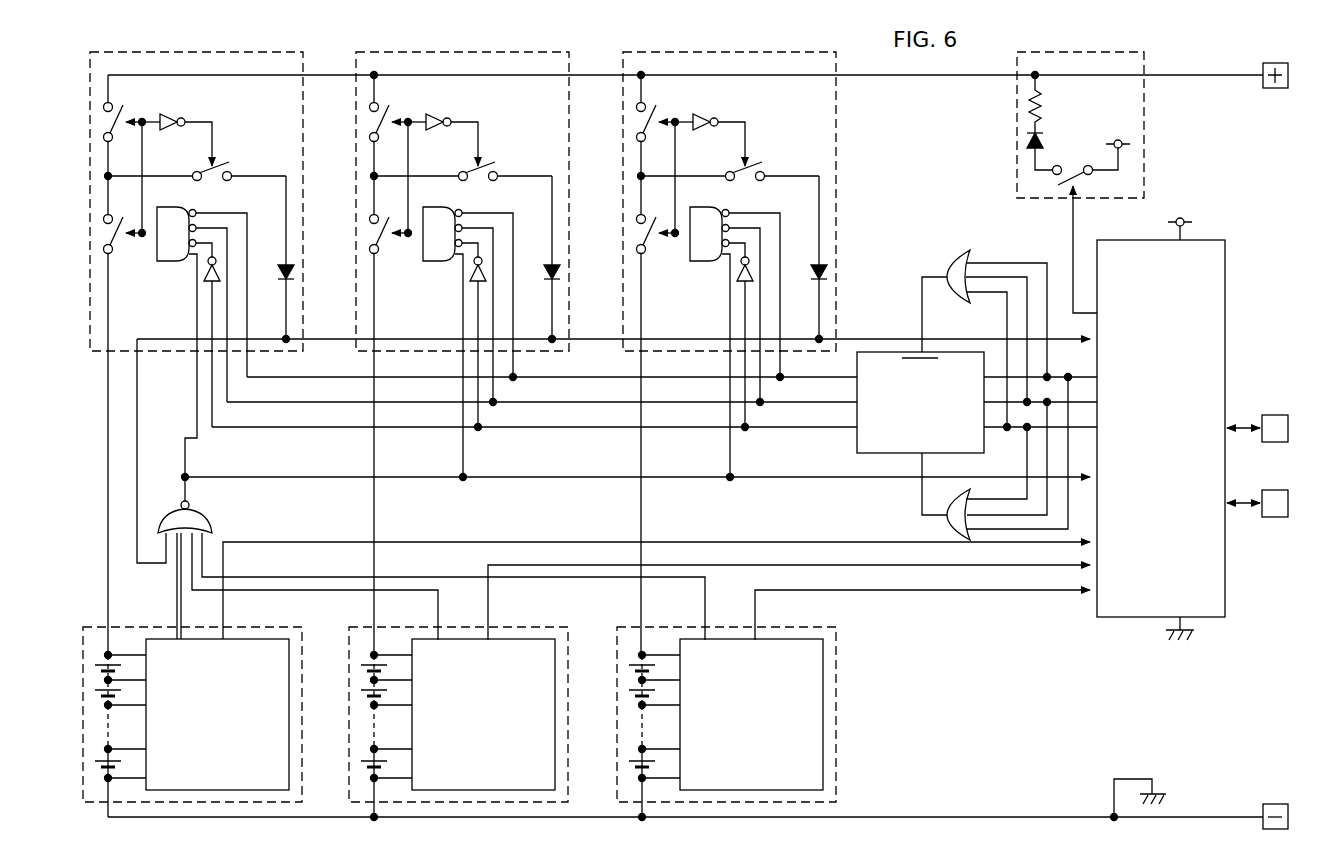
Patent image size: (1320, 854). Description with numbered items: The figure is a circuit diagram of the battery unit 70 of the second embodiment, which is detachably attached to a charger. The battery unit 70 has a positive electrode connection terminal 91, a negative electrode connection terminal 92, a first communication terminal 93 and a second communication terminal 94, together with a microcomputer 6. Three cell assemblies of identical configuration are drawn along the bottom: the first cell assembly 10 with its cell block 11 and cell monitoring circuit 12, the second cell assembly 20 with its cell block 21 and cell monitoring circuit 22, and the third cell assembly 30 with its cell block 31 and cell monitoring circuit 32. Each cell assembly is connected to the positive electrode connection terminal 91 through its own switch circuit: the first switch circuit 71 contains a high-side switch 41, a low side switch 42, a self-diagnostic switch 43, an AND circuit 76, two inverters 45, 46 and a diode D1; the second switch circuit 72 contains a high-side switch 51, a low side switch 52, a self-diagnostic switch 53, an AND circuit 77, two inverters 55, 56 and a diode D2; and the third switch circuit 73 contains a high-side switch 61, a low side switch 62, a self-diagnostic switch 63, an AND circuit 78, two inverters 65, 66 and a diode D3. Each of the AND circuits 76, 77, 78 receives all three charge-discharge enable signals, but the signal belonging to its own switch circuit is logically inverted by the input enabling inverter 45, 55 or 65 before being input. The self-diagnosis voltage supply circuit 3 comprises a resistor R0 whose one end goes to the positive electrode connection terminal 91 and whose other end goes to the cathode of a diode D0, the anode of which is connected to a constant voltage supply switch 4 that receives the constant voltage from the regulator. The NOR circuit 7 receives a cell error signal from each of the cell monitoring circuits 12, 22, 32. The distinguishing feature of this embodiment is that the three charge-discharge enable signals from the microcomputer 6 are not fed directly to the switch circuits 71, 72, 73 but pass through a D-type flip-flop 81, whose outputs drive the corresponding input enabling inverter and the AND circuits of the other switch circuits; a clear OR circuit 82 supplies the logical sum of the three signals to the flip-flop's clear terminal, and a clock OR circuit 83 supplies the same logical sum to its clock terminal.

The battery unit 70 is at (66, 65).
The first switch circuit 71 is at (278, 52).
The second switch circuit 72 is at (544, 52).
The third switch circuit 73 is at (811, 52).
The high-side switch 41 is at (100, 124).
The low side switch 42 is at (100, 235).
The self-diagnostic switch 43 is at (205, 172).
The input enabling inverter 45 is at (204, 283).
The inverter 46 is at (170, 118).
The AND circuit 76 is at (163, 260).
The diode D1 is at (278, 270).
The high-side switch 51 is at (366, 124).
The low side switch 52 is at (366, 235).
The self-diagnostic switch 53 is at (471, 172).
The input enabling inverter 55 is at (470, 283).
The inverter 56 is at (436, 118).
The AND circuit 77 is at (429, 260).
The diode D2 is at (544, 270).
The high-side switch 61 is at (633, 124).
The low side switch 62 is at (633, 235).
The self-diagnostic switch 63 is at (738, 172).
The input enabling inverter 65 is at (763, 286).
The inverter 66 is at (703, 118).
The AND circuit 78 is at (696, 260).
The diode D3 is at (811, 271).
The self-diagnosis voltage supply circuit 3 is at (1114, 52).
The resistor R0 is at (1042, 98).
The diode D0 is at (1042, 146).
The constant voltage supply switch 4 is at (1083, 176).
The positive electrode connection terminal 91 is at (1272, 62).
The negative electrode connection terminal 92 is at (1268, 803).
The first communication terminal 93 is at (1272, 414).
The second communication terminal 94 is at (1272, 489).
The microcomputer 6 is at (1206, 242).
The D-type flip-flop 81 is at (857, 444).
The clear OR circuit 82 is at (954, 258).
The clock OR circuit 83 is at (948, 528).
The NOR circuit 7 is at (167, 512).
The first cell assembly 10 is at (255, 628).
The cell block 11 is at (100, 652).
The cell monitoring circuit 12 is at (292, 688).
The second cell assembly 20 is at (521, 628).
The cell block 21 is at (366, 652).
The cell monitoring circuit 22 is at (558, 688).
The third cell assembly 30 is at (789, 628).
The cell block 31 is at (633, 652).
The cell monitoring circuit 32 is at (826, 688).